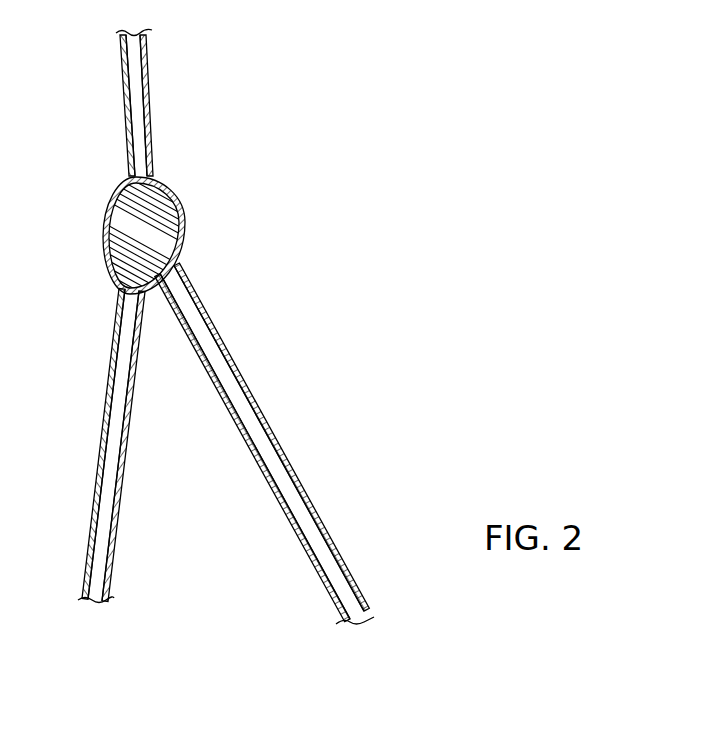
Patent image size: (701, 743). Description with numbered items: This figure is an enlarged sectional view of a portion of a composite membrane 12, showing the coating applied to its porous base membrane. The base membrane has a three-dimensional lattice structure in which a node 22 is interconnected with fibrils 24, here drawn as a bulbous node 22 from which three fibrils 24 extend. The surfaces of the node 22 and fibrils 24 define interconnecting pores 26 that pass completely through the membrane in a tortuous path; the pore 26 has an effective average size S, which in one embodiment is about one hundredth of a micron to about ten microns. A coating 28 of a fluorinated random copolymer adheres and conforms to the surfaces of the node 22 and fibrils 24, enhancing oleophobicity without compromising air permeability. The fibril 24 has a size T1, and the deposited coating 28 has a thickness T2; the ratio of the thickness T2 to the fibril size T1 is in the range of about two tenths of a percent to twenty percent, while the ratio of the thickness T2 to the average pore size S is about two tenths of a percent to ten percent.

The composite membrane 12 is at (231, 136).
The node 22 is at (152, 213).
The fibril 24 is at (133, 72).
The pore 26 is at (177, 498).
The coating 28 is at (150, 115).
The fibril size T1 is at (210, 430).
The coating thickness T2 is at (265, 517).
The average pore size S is at (326, 597).